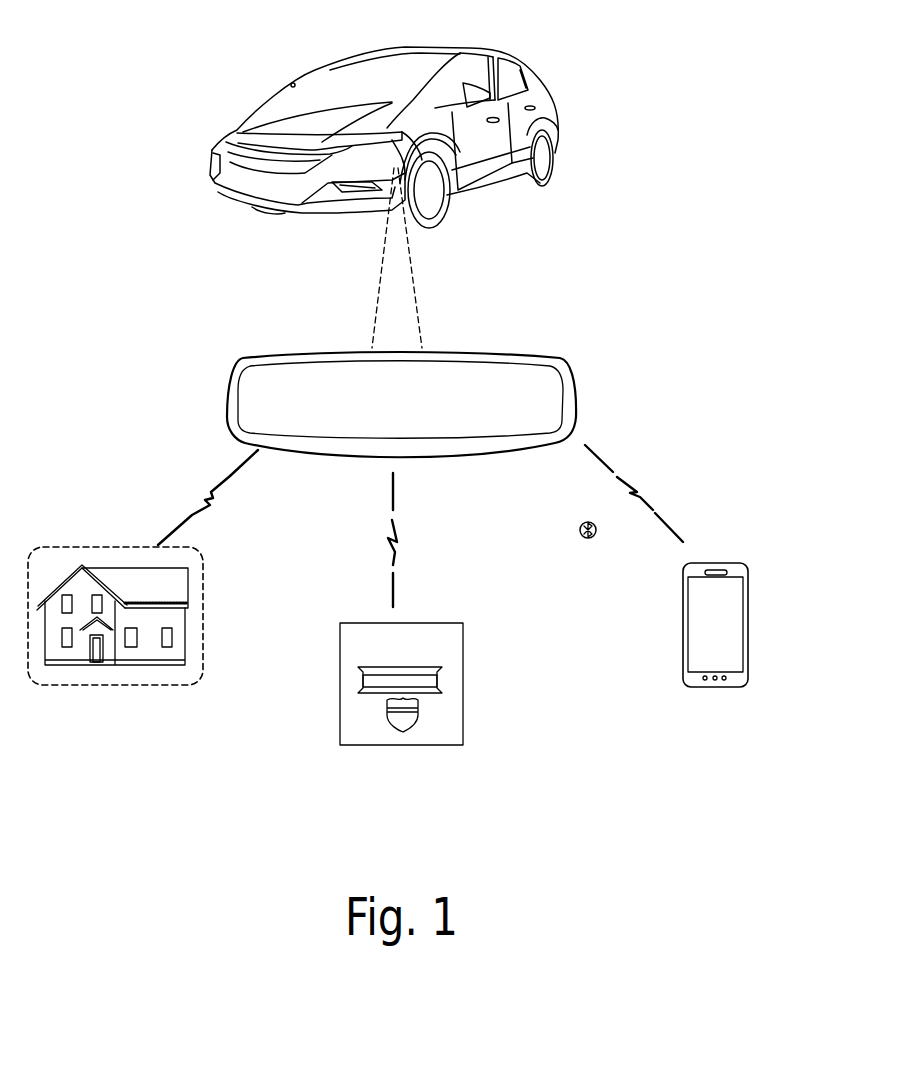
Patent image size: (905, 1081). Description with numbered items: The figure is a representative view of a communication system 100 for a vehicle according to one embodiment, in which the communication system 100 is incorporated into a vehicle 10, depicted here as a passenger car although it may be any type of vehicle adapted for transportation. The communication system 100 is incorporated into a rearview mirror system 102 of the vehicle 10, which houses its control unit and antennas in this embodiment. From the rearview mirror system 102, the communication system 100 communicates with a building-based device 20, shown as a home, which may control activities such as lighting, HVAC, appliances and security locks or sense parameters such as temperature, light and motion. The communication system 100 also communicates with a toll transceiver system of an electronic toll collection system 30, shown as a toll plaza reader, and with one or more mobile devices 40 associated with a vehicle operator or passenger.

The communication system 100 is at (238, 68).
The vehicle 10 is at (504, 56).
The rearview mirror system 102 is at (487, 357).
The building-based device 20 is at (203, 613).
The electronic toll collection system 30 is at (463, 683).
The mobile device 40 is at (715, 687).